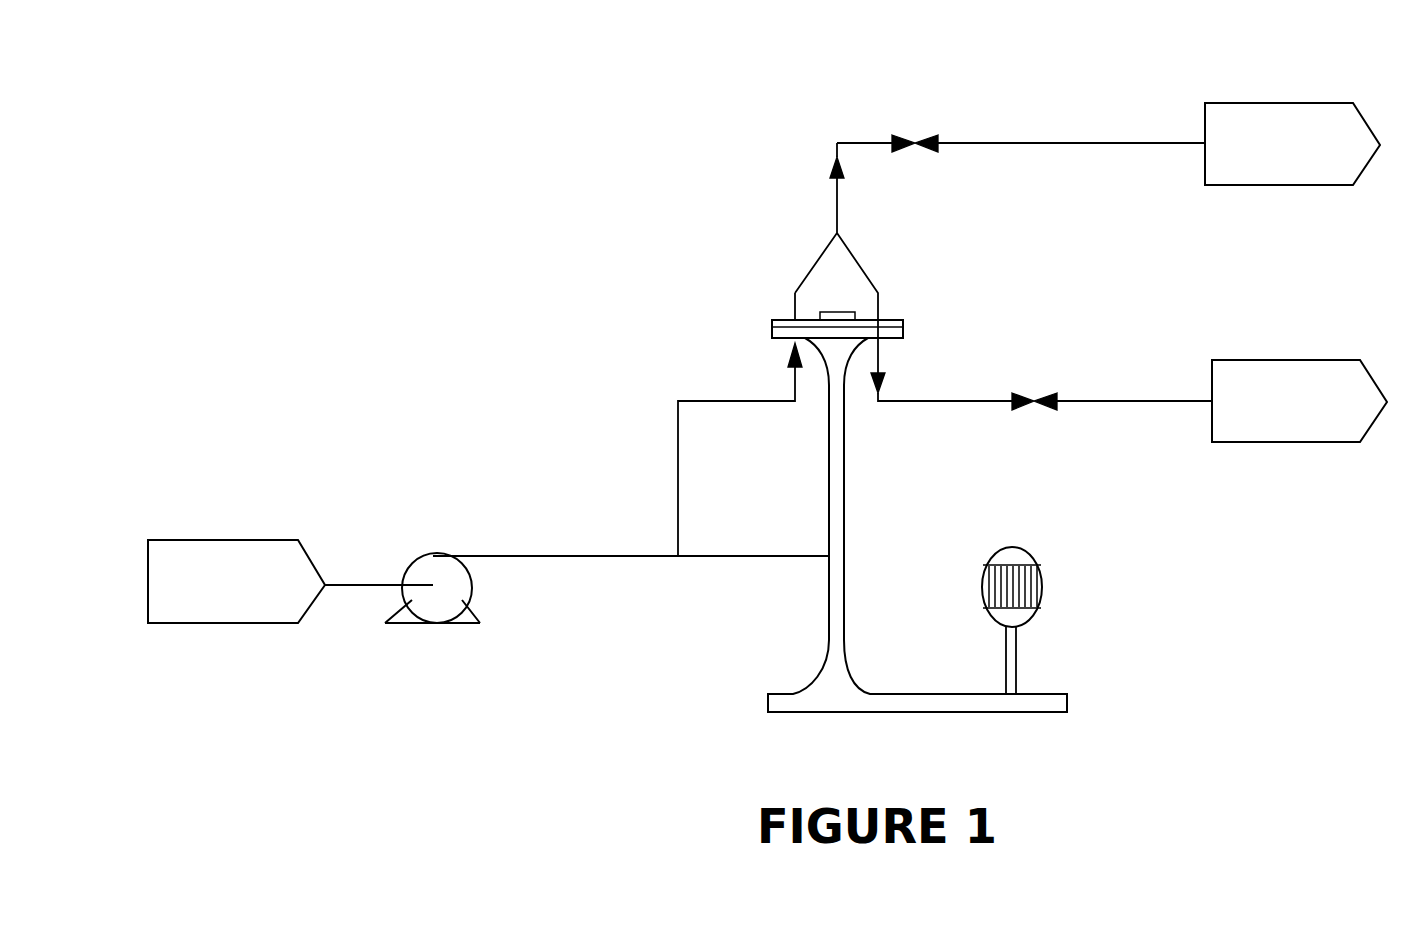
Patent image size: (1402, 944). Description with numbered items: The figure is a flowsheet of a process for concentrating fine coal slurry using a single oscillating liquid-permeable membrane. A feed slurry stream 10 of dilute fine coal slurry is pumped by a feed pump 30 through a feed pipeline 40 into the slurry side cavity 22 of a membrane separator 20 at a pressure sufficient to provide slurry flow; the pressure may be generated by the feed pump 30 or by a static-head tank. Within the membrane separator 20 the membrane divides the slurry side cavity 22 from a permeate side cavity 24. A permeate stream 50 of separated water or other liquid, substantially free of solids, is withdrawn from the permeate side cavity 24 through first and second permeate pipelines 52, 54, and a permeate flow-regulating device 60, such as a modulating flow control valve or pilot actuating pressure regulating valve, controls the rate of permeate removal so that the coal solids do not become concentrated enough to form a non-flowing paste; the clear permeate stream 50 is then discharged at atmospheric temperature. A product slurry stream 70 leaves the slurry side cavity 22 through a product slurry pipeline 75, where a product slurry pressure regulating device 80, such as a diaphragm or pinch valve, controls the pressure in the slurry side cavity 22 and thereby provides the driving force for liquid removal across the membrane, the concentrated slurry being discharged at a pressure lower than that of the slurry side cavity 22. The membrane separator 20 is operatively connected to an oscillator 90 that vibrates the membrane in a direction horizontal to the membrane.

The feed slurry stream 10 is at (222, 540).
The membrane separator 20 is at (771, 330).
The slurry side cavity 22 is at (778, 340).
The permeate side cavity 24 is at (785, 318).
The feed pump 30 is at (430, 568).
The feed pipeline 40 is at (585, 556).
The permeate stream 50 is at (1283, 103).
The first permeate pipeline 52 is at (815, 265).
The second permeate pipeline 54 is at (868, 273).
The permeate flow-regulating device 60 is at (915, 140).
The product slurry stream 70 is at (1278, 360).
The product slurry pipeline 75 is at (952, 401).
The product slurry pressure regulating device 80 is at (1030, 398).
The oscillator 90 is at (1044, 590).